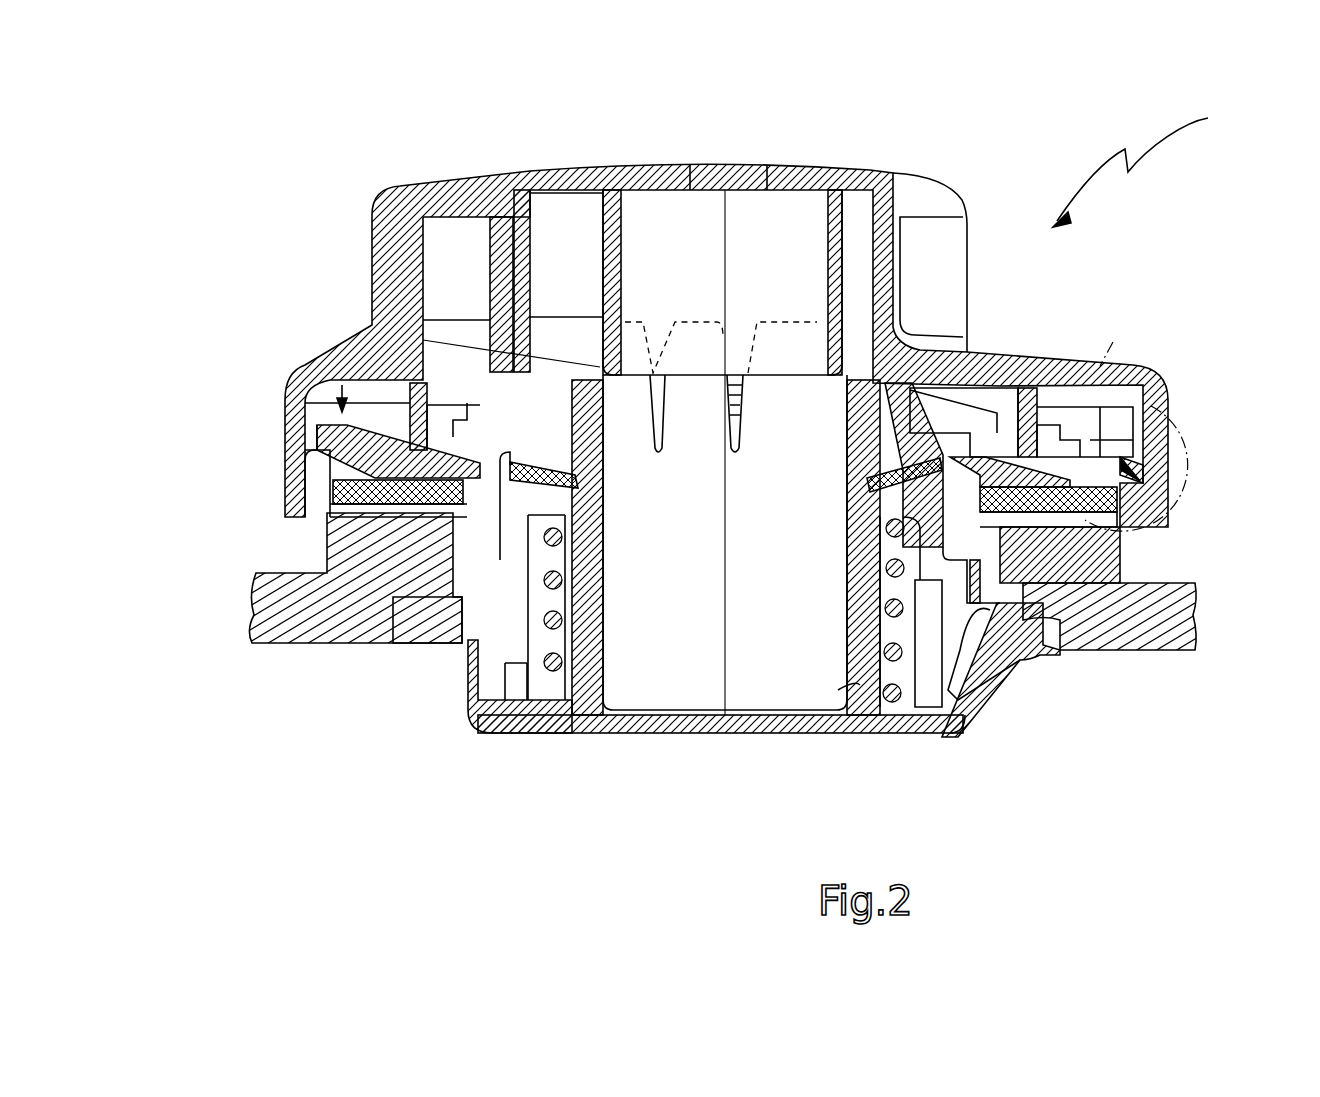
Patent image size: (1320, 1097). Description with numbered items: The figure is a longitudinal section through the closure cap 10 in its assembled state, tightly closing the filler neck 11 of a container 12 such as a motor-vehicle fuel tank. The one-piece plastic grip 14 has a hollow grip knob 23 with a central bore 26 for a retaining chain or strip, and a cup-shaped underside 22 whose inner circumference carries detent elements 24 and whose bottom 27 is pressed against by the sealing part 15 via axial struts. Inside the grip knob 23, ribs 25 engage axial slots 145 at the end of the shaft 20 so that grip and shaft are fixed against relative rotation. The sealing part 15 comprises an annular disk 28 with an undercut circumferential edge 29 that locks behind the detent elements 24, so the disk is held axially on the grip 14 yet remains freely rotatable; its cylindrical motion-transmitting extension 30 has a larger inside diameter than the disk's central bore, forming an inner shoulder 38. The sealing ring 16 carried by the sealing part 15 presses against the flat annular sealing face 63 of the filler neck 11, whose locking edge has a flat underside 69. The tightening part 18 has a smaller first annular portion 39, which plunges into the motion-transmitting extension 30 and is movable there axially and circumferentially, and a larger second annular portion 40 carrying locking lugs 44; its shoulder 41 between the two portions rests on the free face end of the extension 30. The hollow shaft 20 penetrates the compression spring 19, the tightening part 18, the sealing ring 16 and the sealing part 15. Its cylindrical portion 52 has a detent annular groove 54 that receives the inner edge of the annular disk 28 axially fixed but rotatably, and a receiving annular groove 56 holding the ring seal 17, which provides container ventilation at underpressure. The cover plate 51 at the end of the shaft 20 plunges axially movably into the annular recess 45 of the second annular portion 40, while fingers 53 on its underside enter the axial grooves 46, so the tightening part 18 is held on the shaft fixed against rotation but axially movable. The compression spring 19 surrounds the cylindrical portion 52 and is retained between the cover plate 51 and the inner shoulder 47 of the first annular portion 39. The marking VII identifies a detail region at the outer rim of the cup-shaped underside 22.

The closure cap 10 is at (1145, 163).
The grip 14 is at (955, 187).
The grip knob 23 is at (385, 228).
The bore 26 is at (700, 178).
The ribs 25 is at (738, 338).
The axial slots 145 is at (850, 293).
The inner shoulder 38 is at (520, 435).
The detent annular groove 54 is at (563, 385).
The inner shoulder 47 is at (578, 525).
The undercut circumferential edge 29 is at (323, 466).
The annular disk 28 is at (345, 475).
The cup-shaped underside 22 is at (292, 425).
The sealing part 15 is at (335, 362).
The receiving annular groove 56 is at (587, 490).
The annular recess 45 is at (520, 733).
The cover plate 51 is at (685, 735).
The shaft 20 is at (624, 737).
The tightening part 18 is at (495, 650).
The axial grooves 46 is at (985, 705).
The ring seal 17 is at (870, 465).
The shoulder 41 is at (927, 570).
The compression spring 19 is at (893, 590).
The bottom 27 is at (1075, 420).
The detail section VII is at (1113, 342).
The detent elements 24 is at (1135, 462).
The sealing ring 16 is at (1110, 520).
The annular sealing face 63 is at (1145, 548).
The underside 69 is at (1062, 630).
The second annular portion 40 is at (1012, 627).
The locking lugs 44 is at (1070, 650).
The container 12 is at (342, 652).
The motion-transmitting extension 30 is at (420, 600).
The first annular portion 39 is at (470, 650).
The filler neck 11 is at (335, 607).
The cylindrical portion 52 is at (860, 682).
The fingers 53 is at (905, 705).